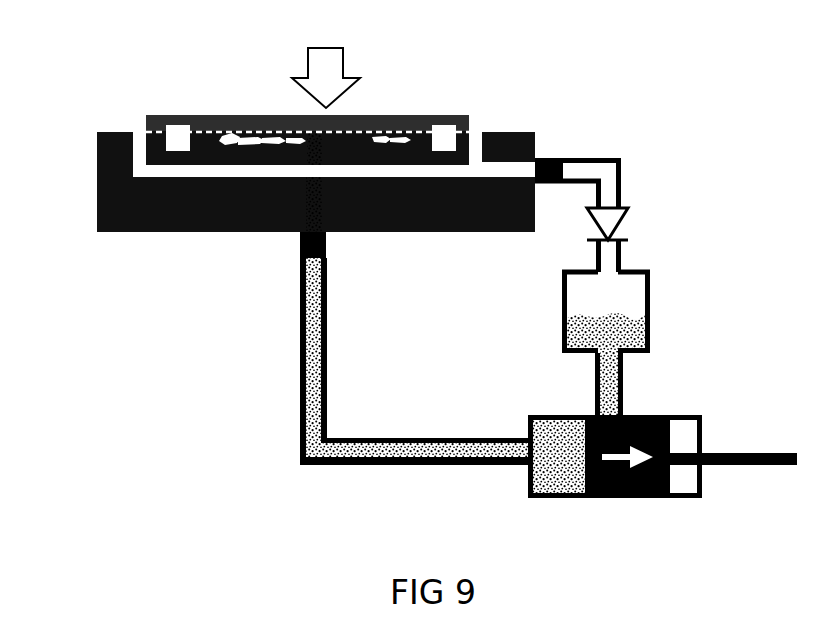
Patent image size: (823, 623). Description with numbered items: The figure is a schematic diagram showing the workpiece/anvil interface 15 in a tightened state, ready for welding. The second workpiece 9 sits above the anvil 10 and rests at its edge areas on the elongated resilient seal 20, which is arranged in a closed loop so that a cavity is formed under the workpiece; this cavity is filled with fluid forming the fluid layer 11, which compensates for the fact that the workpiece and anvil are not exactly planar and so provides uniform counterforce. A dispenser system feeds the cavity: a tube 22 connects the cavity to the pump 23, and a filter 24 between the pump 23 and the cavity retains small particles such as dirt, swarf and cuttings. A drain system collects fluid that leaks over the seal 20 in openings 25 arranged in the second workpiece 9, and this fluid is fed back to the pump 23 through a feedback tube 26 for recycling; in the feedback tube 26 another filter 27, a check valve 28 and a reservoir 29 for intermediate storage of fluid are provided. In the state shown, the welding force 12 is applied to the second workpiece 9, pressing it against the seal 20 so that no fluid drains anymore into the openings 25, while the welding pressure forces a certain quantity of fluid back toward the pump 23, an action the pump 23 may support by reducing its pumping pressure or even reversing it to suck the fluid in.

The second workpiece 9 is at (299, 106).
The anvil 10 is at (287, 186).
The fluid layer 11 is at (228, 135).
The welding force 12 is at (326, 60).
The workpiece/anvil interface 15 is at (228, 356).
The seal 20 is at (183, 133).
The tube 22 is at (327, 317).
The pump 23 is at (648, 413).
The filter 24 is at (327, 245).
The openings 25 is at (142, 135).
The feedback tube 26 is at (582, 155).
The filter 27 is at (552, 157).
The check valve 28 is at (620, 227).
The reservoir 29 is at (650, 312).